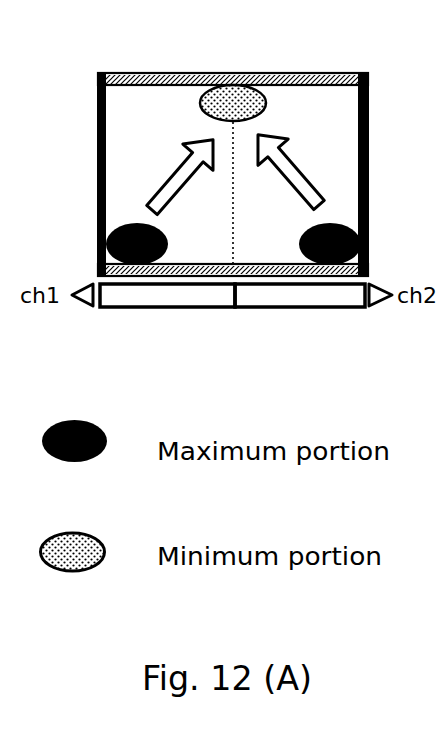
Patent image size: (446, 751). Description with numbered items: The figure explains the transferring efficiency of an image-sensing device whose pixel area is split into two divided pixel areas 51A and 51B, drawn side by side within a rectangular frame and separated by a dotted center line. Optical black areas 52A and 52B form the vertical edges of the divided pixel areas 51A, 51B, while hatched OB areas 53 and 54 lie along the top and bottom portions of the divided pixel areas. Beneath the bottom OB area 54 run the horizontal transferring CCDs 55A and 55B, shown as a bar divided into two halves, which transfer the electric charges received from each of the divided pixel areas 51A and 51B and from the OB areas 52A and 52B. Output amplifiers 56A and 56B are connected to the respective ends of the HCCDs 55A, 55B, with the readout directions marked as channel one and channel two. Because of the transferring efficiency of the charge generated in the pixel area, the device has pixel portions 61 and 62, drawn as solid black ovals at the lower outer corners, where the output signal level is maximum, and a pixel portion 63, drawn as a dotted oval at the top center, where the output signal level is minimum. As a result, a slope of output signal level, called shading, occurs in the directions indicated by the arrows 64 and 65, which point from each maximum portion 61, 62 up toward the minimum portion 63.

The divided pixel area 51A is at (122, 103).
The divided pixel area 51B is at (337, 100).
The optical black area 52A is at (97, 140).
The optical black area 52B is at (372, 125).
The OB area 53 is at (300, 72).
The OB area 54 is at (368, 258).
The horizontal transferring CCD 55A is at (192, 304).
The horizontal transferring CCD 55B is at (295, 304).
The output amplifier 56A is at (83, 304).
The output amplifier 56B is at (378, 304).
The pixel portion 61 is at (123, 225).
The pixel portion 62 is at (348, 225).
The pixel portion 63 is at (235, 100).
The arrow 64 is at (185, 166).
The arrow 65 is at (298, 159).